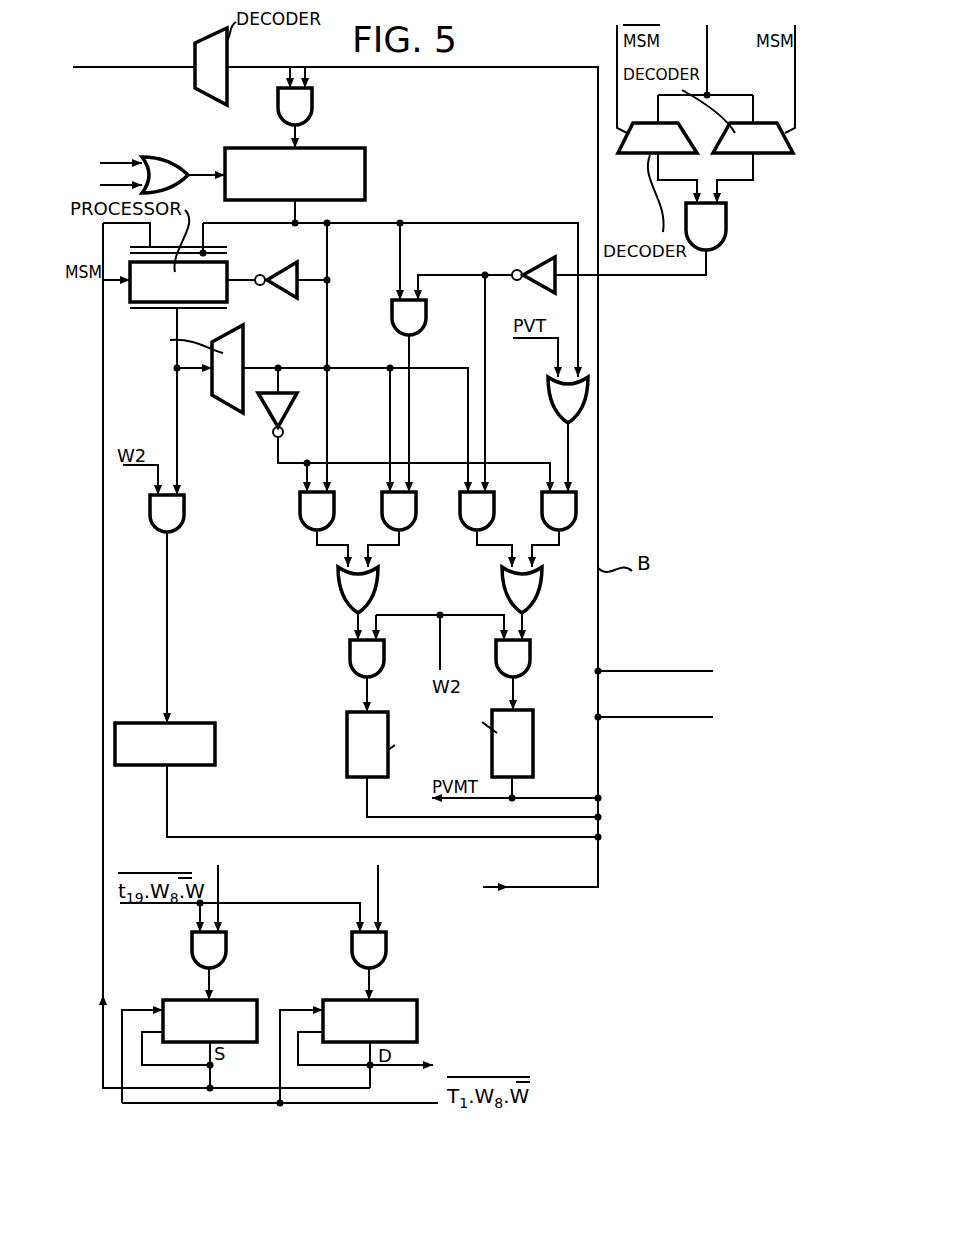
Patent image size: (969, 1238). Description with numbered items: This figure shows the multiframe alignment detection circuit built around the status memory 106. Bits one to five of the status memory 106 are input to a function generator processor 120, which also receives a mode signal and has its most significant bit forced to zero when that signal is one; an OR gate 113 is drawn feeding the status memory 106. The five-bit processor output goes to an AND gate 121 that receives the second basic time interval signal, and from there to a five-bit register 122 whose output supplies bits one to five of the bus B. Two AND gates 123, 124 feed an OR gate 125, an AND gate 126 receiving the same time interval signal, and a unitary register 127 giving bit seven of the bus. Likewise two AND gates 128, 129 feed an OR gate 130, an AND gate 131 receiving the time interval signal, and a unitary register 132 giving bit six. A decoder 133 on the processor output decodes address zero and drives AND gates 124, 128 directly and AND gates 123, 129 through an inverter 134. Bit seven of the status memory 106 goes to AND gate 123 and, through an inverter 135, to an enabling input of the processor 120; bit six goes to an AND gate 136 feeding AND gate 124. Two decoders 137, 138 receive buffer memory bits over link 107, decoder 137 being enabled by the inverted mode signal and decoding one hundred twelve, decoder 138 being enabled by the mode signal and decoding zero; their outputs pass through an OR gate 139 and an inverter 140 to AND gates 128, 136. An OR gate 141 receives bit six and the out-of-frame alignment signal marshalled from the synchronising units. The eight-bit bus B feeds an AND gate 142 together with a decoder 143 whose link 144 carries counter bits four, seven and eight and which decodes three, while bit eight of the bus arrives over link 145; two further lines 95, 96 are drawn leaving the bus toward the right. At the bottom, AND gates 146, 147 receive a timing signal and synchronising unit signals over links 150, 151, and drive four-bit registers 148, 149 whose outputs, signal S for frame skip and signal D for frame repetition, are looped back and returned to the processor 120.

The output line 95 is at (685, 670).
The output line 96 is at (690, 717).
The status memory 106 is at (355, 172).
The link 107 is at (707, 43).
The OR gate 113 is at (160, 163).
The function generator processor 120 is at (218, 272).
The AND gate 121 is at (170, 518).
The 5-bit register 122 is at (197, 730).
The AND gate 123 is at (310, 507).
The AND gate 124 is at (390, 510).
The OR gate 125 is at (348, 583).
The AND gate 126 is at (355, 652).
The unitary register 127 is at (355, 740).
The AND gate 128 is at (470, 512).
The AND gate 129 is at (555, 518).
The OR gate 130 is at (510, 588).
The AND gate 131 is at (517, 658).
The unitary register 132 is at (520, 742).
The decoder 133 is at (230, 397).
The inverter 134 is at (265, 413).
The inverter 135 is at (280, 296).
The AND gate 136 is at (403, 316).
The decoder 137 is at (645, 143).
The decoder 138 is at (773, 145).
The OR gate 139 is at (710, 228).
The inverter 140 is at (542, 272).
The OR gate 141 is at (556, 398).
The AND gate 142 is at (298, 105).
The decoder 143 is at (215, 84).
The link 144 is at (137, 66).
The link 145 is at (523, 887).
The AND gate 146 is at (200, 950).
The AND gate 147 is at (375, 950).
The register 148 is at (240, 1010).
The register 149 is at (405, 1020).
The link 150 is at (220, 878).
The link 151 is at (378, 882).